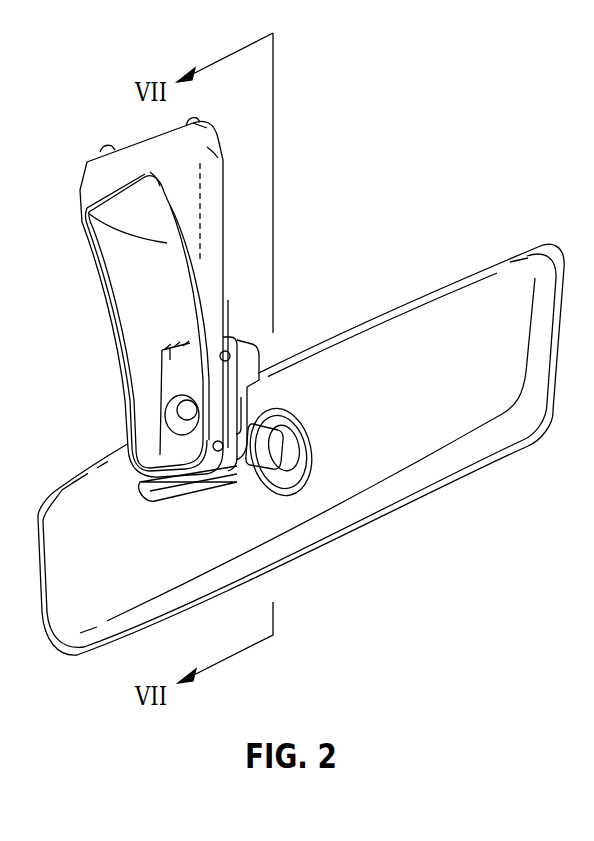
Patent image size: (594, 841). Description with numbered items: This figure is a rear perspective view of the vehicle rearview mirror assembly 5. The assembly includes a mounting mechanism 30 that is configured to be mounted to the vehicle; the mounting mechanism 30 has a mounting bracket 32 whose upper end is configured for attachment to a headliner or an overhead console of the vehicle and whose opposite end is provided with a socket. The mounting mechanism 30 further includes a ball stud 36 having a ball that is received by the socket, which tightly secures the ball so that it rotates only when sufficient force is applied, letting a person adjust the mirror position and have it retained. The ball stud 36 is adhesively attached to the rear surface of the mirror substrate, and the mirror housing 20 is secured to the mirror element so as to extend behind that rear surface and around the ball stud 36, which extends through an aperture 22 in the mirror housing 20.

The rearview mirror assembly 5 is at (472, 126).
The mirror housing 20 is at (467, 307).
The aperture 22 is at (292, 410).
The mounting mechanism 30 is at (86, 382).
The mounting bracket 32 is at (98, 272).
The ball stud 36 is at (275, 445).